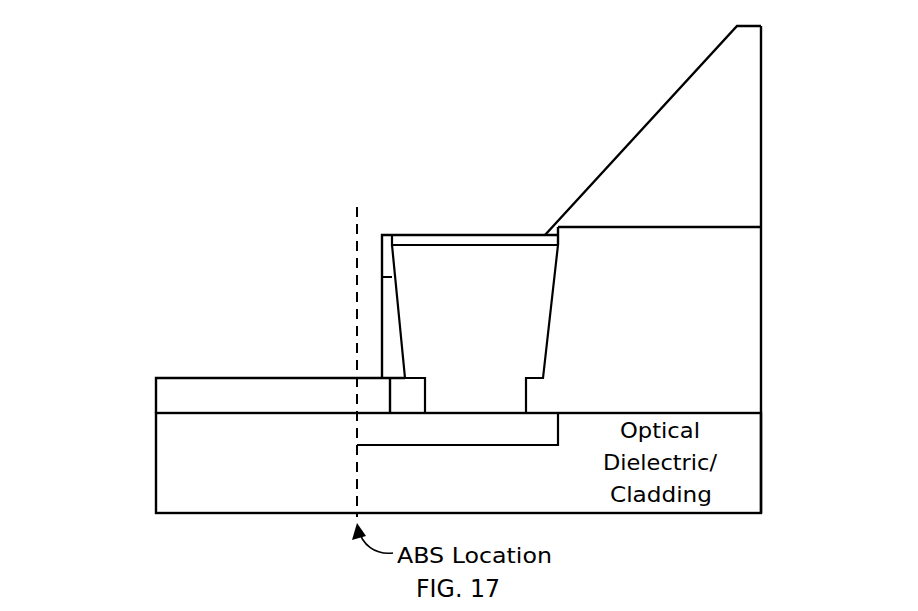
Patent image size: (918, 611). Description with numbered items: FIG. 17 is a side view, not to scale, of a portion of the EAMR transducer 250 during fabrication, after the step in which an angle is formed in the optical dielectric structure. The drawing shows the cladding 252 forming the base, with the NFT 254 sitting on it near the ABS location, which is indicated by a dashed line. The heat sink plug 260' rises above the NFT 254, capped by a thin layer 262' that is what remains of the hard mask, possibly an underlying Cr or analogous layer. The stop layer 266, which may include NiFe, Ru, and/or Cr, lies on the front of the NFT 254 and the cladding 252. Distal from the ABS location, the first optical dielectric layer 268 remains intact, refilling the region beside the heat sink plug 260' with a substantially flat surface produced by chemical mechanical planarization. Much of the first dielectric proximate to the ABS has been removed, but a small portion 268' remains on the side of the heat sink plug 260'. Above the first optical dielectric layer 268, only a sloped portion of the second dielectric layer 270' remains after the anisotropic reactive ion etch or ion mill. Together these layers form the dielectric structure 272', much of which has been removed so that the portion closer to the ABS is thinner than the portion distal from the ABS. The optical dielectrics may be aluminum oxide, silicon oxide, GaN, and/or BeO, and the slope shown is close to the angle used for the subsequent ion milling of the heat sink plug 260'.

The EAMR transducer 250 is at (95, 54).
The cladding 252 is at (156, 460).
The NFT 254 is at (558, 447).
The stop layer 266 is at (156, 398).
The first optical dielectric layer 268 is at (703, 296).
The portion of the first dielectric layer 268' is at (341, 296).
The second dielectric layer 270' is at (698, 130).
The heat sink plug 260' is at (463, 272).
The thin layer 262' is at (475, 204).
The dielectric structure 272' is at (59, 187).